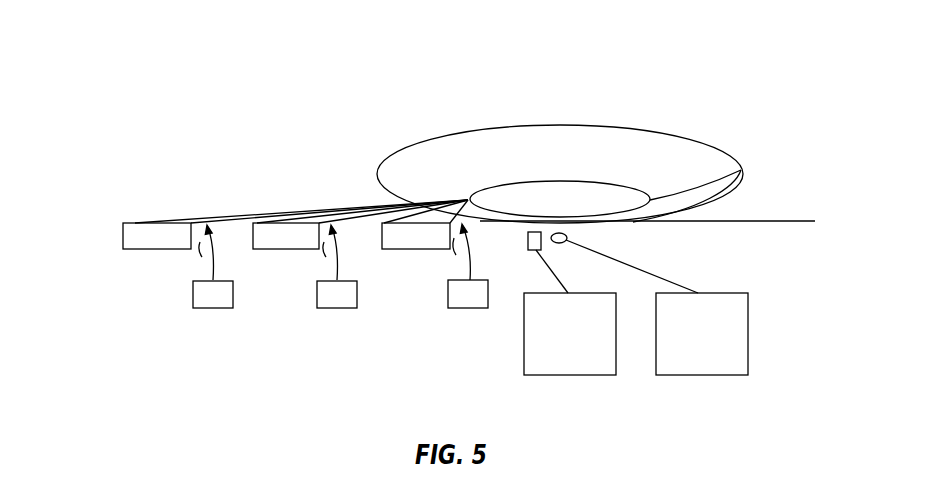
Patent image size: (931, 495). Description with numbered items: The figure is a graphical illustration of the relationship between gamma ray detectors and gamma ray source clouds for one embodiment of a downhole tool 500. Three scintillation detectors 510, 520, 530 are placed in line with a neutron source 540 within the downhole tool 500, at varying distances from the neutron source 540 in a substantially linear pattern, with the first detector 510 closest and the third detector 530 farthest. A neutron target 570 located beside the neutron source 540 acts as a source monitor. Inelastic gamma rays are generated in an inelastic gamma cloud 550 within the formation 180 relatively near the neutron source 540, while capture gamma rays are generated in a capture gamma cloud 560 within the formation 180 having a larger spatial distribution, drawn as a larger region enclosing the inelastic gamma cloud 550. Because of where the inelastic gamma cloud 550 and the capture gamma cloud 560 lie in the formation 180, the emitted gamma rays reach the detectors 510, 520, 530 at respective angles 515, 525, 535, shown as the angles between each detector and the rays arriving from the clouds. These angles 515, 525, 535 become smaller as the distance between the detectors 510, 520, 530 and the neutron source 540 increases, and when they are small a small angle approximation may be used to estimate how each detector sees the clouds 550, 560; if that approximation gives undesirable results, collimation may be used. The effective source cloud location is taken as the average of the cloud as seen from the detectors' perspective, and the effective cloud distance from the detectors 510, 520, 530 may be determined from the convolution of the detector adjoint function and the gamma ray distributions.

The downhole tool 500 is at (233, 64).
The scintillation detector 510 is at (462, 198).
The scintillation detector 520 is at (195, 188).
The scintillation detector 530 is at (138, 222).
The angle θ 515 is at (470, 310).
The angle θ 525 is at (337, 309).
The angle θ 535 is at (212, 309).
The neutron source 540 is at (672, 375).
The inelastic gamma cloud 550 is at (740, 165).
The capture gamma cloud 560 is at (633, 127).
The neutron target 570 is at (552, 375).
The formation 180 is at (789, 221).